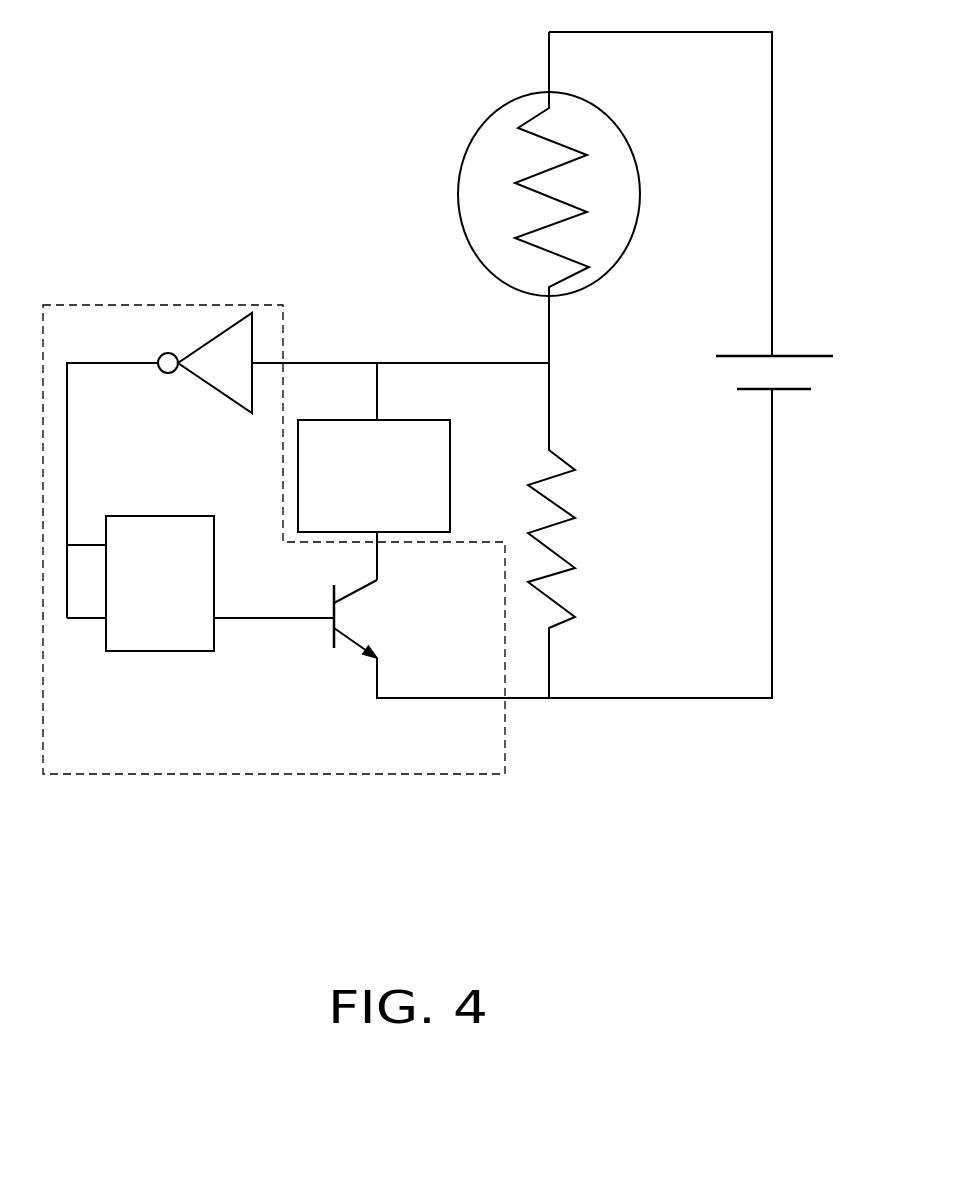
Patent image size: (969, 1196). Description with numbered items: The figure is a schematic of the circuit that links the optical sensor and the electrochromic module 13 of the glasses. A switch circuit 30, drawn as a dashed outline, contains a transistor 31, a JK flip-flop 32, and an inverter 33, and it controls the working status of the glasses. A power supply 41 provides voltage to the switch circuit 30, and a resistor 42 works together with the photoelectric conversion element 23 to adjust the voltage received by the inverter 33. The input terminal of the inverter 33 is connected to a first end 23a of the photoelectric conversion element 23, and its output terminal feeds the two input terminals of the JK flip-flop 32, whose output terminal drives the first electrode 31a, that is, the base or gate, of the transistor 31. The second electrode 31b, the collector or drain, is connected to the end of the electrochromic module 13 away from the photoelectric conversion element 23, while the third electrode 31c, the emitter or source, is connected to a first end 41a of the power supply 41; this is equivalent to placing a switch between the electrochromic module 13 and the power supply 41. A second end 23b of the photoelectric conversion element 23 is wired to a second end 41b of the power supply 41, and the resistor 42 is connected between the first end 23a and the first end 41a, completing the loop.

The electrochromic module 13 is at (337, 420).
The photoelectric conversion element 23 is at (475, 135).
The first end of the photoelectric conversion element 23a is at (548, 343).
The second end of the photoelectric conversion element 23b is at (548, 55).
The switch circuit 30 is at (120, 303).
The transistor 31 is at (332, 635).
The first electrode 31a is at (258, 617).
The second electrode 31b is at (378, 552).
The third electrode 31c is at (373, 688).
The JK flip-flop 32 is at (160, 652).
The inverter 33 is at (233, 323).
The power supply 41 is at (813, 355).
The first end of the power supply 41a is at (773, 448).
The second end of the power supply 41b is at (773, 200).
The resistor 42 is at (561, 574).